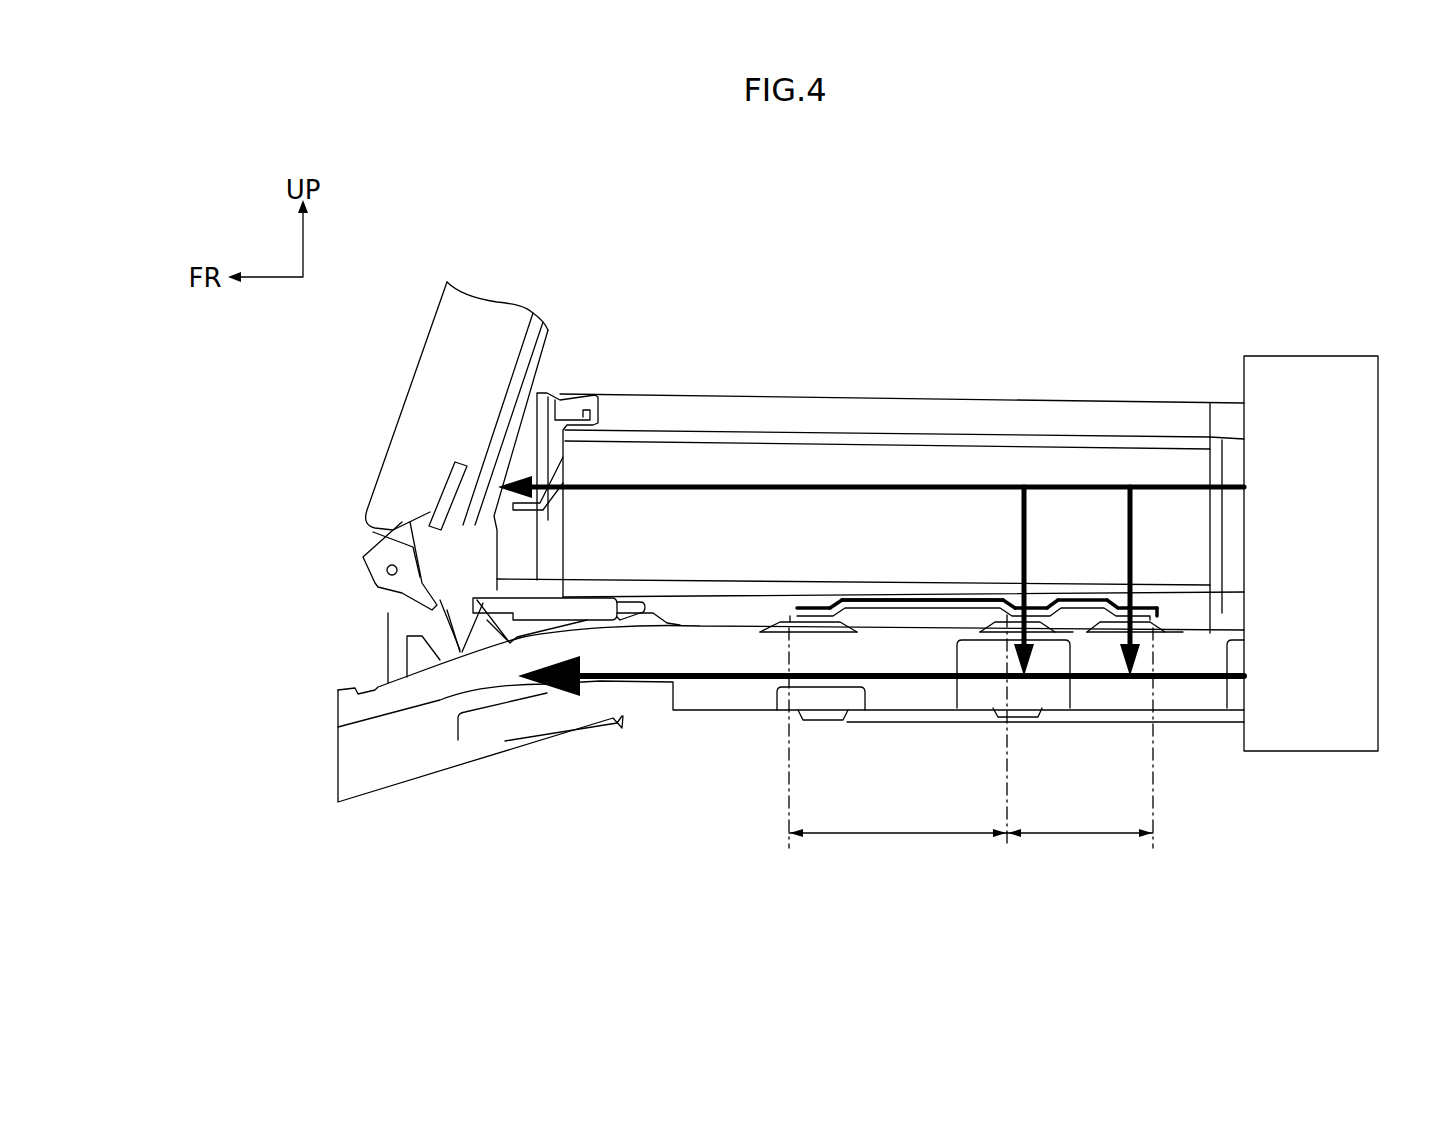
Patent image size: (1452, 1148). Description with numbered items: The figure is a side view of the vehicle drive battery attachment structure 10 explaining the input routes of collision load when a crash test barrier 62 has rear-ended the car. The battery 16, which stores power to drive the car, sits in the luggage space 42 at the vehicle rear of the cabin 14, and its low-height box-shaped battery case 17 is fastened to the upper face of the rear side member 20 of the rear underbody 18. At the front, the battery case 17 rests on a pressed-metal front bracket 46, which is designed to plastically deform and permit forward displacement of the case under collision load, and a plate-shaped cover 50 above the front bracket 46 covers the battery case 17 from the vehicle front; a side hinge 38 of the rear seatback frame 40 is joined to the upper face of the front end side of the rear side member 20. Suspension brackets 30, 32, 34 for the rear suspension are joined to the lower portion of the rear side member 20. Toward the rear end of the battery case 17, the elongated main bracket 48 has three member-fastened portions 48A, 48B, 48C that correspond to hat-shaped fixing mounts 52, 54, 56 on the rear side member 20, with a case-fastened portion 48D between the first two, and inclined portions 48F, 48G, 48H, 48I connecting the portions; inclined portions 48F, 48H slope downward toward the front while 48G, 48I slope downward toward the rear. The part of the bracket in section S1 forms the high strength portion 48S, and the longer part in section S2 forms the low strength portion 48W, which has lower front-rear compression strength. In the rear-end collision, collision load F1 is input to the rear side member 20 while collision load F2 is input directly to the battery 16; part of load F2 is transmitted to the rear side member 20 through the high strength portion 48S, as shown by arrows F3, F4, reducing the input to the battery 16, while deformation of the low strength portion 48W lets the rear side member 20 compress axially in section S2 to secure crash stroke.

The vehicle drive battery attachment structure 10 is at (1000, 240).
The cabin 14 is at (292, 430).
The battery 16 is at (798, 388).
The battery case 17 is at (1060, 401).
The rear underbody 18 is at (709, 780).
The rear side member 20 is at (693, 702).
The suspension bracket 30 is at (594, 733).
The suspension bracket 32 is at (823, 721).
The suspension bracket 34 is at (1027, 718).
The side hinge 38 is at (372, 627).
The rear seatback frame 40 is at (416, 368).
The luggage space 42 is at (887, 317).
The front bracket 46 is at (591, 607).
The main bracket 48 is at (932, 624).
The member-fastened portion 48A is at (800, 604).
The member-fastened portion 48B is at (1013, 602).
The member-fastened portion 48C is at (1158, 604).
The case-fastened portion 48D is at (873, 600).
The inclined portion 48F is at (824, 603).
The inclined portion 48G is at (1012, 604).
The inclined portion 48H is at (1047, 603).
The inclined portion 48I is at (1133, 603).
The high strength portion 48S is at (1095, 598).
The low strength portion 48W is at (913, 590).
The cover 50 is at (521, 437).
The fixing mount 52 is at (806, 628).
The fixing mount 54 is at (1043, 627).
The fixing mount 56 is at (1147, 627).
The crash test barrier 62 is at (1310, 356).
The collision load F1 is at (881, 713).
The collision load F2 is at (921, 486).
The load transmission arrow F3 is at (1136, 508).
The load transmission arrow F4 is at (1030, 508).
The section S1 is at (1075, 838).
The section S2 is at (898, 838).